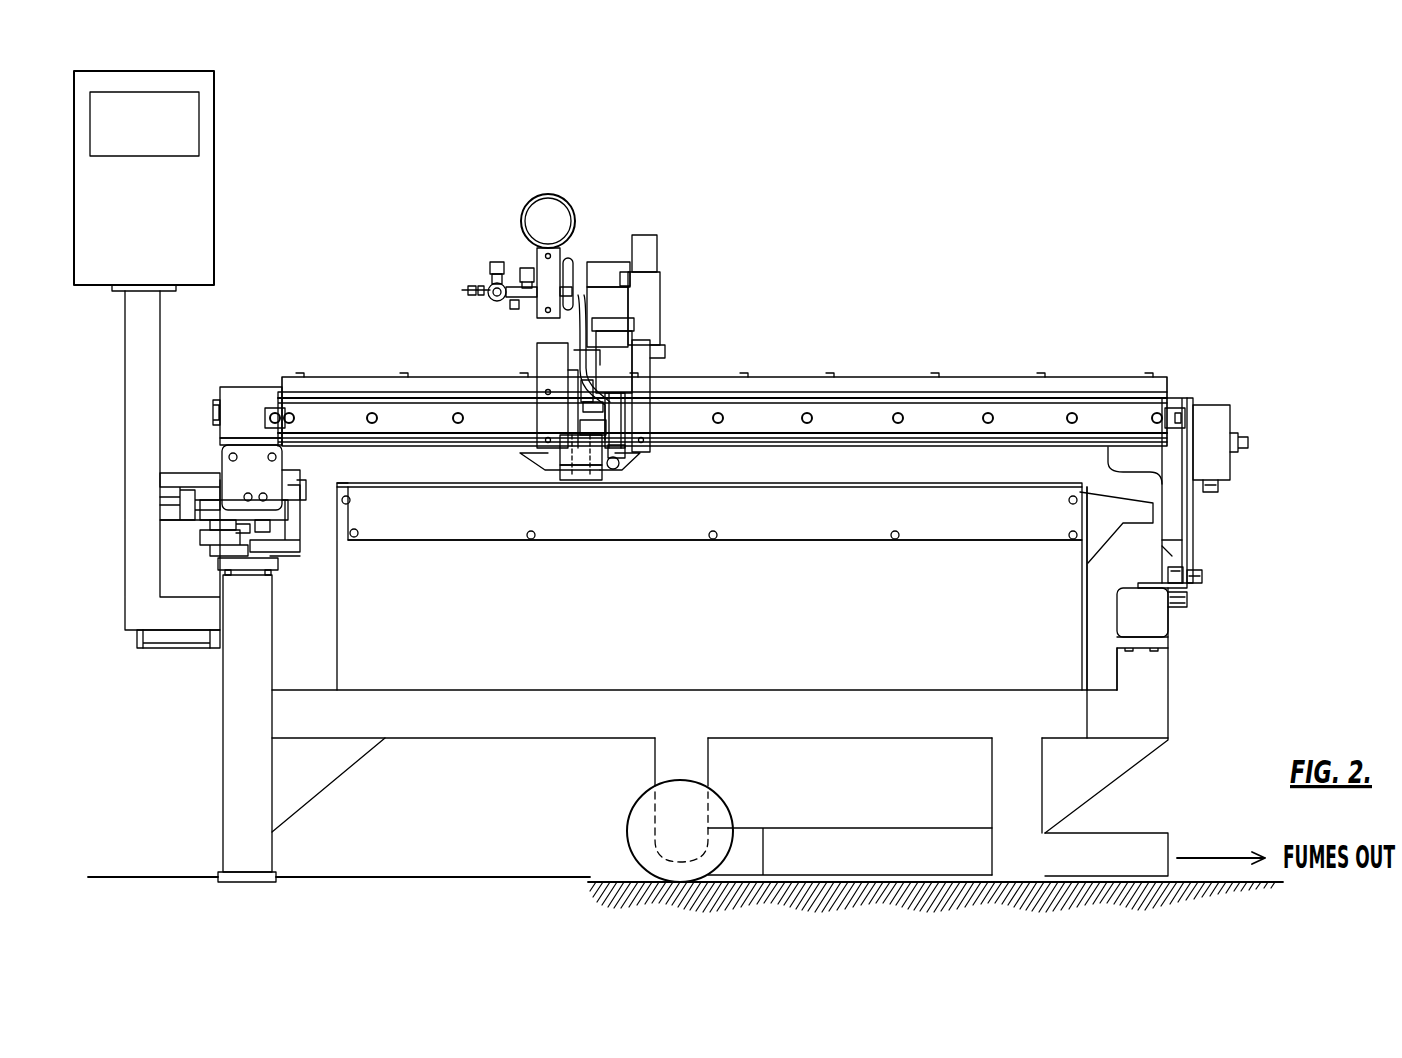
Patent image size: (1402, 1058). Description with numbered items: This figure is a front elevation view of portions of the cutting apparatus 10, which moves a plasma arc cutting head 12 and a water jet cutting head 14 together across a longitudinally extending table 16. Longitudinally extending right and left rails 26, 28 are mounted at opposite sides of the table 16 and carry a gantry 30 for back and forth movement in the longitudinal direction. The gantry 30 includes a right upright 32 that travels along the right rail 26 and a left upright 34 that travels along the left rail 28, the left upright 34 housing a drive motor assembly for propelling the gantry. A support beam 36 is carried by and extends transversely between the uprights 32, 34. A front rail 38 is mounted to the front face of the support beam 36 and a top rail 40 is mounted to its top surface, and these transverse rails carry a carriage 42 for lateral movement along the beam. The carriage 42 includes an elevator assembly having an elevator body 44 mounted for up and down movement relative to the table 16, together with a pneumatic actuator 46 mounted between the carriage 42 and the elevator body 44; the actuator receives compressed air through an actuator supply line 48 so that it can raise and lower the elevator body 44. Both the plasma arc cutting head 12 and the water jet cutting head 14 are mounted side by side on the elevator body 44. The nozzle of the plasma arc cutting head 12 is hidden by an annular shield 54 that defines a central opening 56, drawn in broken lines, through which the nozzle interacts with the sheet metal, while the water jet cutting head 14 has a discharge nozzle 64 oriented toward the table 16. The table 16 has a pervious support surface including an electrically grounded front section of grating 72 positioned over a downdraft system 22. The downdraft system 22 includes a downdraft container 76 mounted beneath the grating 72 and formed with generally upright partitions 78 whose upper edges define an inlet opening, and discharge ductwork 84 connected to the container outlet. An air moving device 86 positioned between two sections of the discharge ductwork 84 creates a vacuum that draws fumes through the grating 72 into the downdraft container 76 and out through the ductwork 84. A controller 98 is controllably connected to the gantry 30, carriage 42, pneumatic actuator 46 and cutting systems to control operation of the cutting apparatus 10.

The cutting apparatus 10 is at (1148, 270).
The plasma arc cutting head 12 is at (570, 415).
The water jet cutting head 14 is at (625, 370).
The table 16 is at (245, 725).
The downdraft system 22 is at (728, 813).
The right rail 26 is at (1155, 588).
The left rail 28 is at (225, 547).
The gantry 30 is at (1195, 402).
The right upright 32 is at (1195, 535).
The left upright 34 is at (232, 466).
The support beam 36 is at (246, 400).
The front rail 38 is at (1102, 420).
The top rail 40 is at (962, 385).
The carriage 42 is at (616, 340).
The elevator body 44 is at (620, 465).
The pneumatic actuator 46 is at (582, 410).
The actuator supply line 48 is at (490, 272).
The annular shield 54 is at (532, 473).
The central opening 56 is at (562, 478).
The discharge nozzle 64 is at (632, 473).
The front section of grating 72 is at (336, 453).
The downdraft container 76 is at (712, 586).
The upright partitions 78 is at (715, 590).
The discharge ductwork 84 is at (655, 754).
The air moving device 86 is at (628, 854).
The controller 98 is at (144, 181).